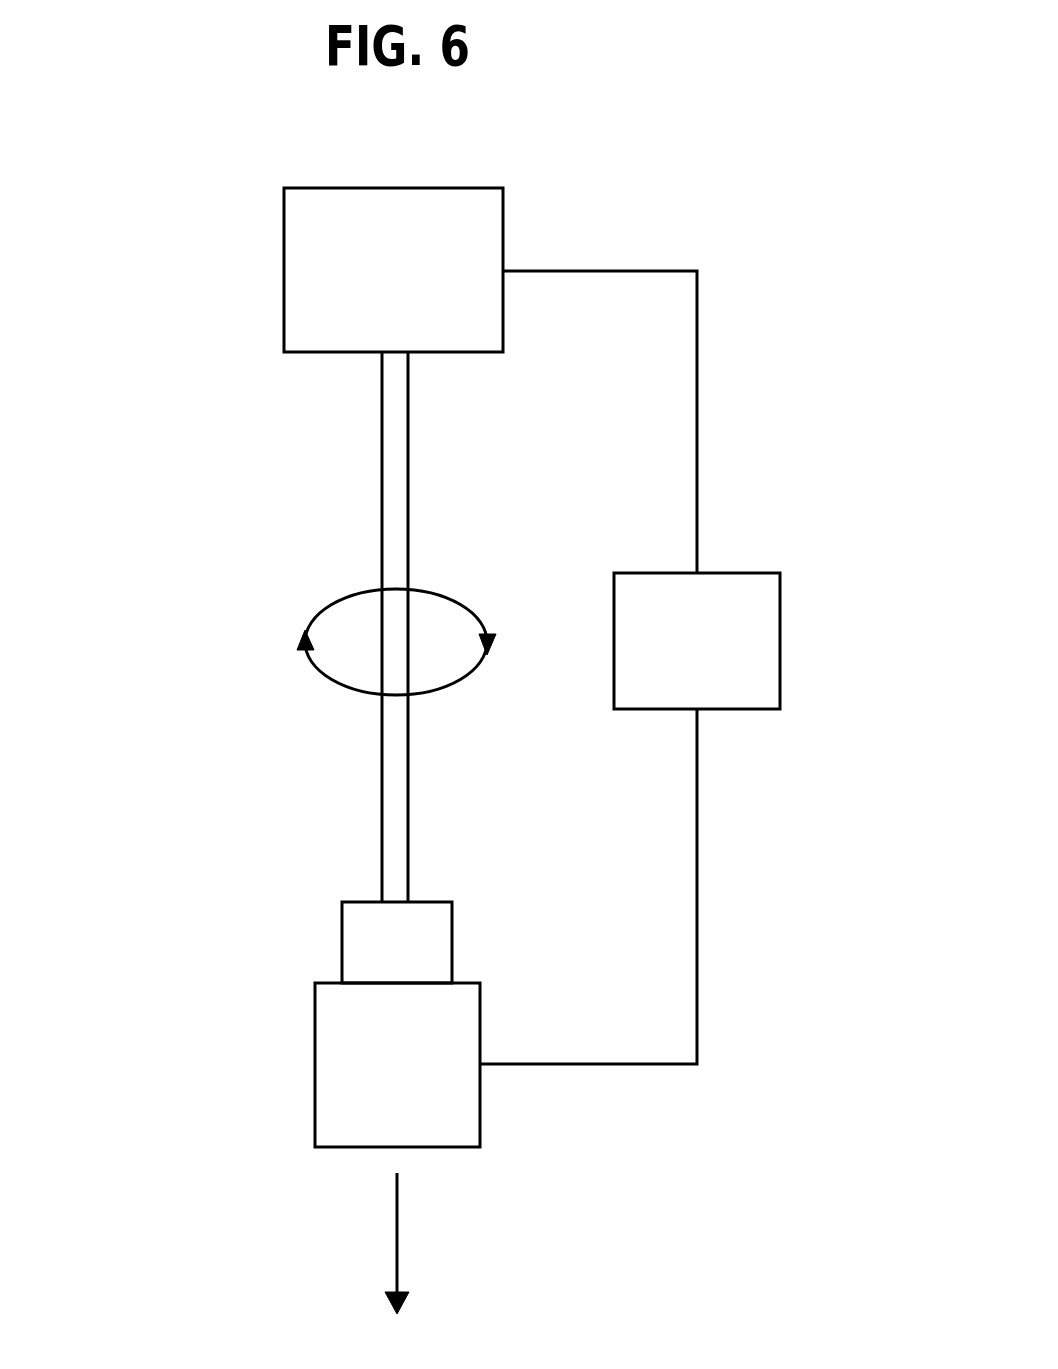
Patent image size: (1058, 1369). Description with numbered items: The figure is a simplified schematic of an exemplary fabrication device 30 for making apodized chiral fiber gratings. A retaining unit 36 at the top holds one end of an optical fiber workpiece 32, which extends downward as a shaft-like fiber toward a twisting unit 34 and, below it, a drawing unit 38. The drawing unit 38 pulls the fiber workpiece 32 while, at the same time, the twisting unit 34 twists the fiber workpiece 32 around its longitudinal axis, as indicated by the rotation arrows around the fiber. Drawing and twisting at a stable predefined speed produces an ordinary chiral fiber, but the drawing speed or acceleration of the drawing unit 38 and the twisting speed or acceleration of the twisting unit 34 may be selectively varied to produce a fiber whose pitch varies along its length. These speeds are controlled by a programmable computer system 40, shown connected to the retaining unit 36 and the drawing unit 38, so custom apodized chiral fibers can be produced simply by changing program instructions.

The fabrication device 30 is at (177, 602).
The optical fiber workpiece 32 is at (380, 530).
The twisting unit 34 is at (342, 942).
The retaining unit 36 is at (503, 228).
The drawing unit 38 is at (314, 1063).
The programmable computer system 40 is at (780, 638).